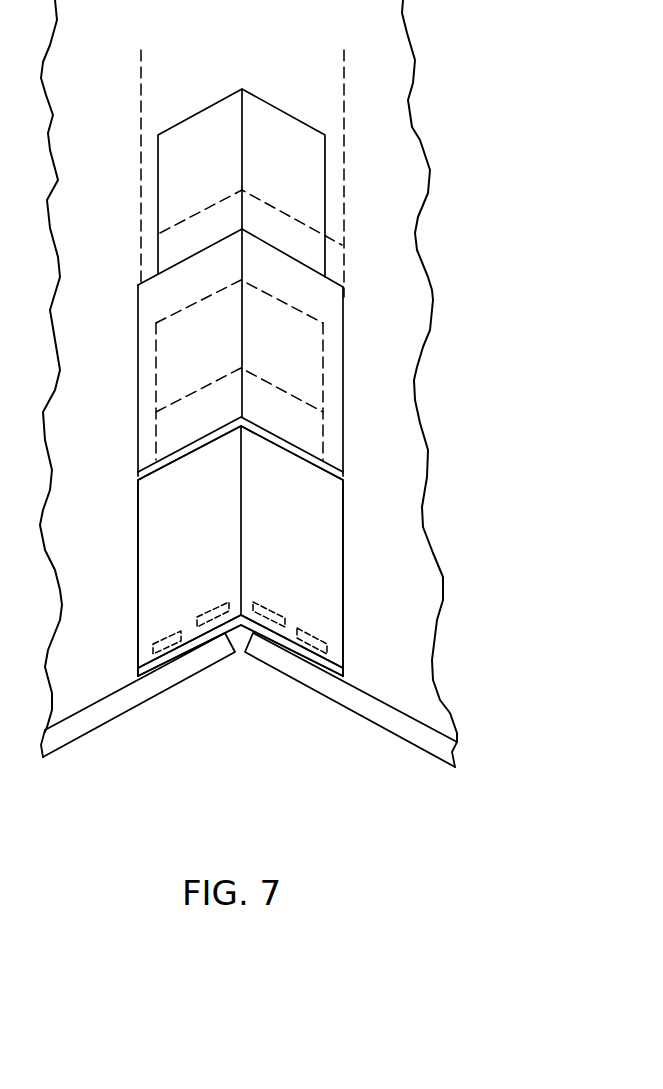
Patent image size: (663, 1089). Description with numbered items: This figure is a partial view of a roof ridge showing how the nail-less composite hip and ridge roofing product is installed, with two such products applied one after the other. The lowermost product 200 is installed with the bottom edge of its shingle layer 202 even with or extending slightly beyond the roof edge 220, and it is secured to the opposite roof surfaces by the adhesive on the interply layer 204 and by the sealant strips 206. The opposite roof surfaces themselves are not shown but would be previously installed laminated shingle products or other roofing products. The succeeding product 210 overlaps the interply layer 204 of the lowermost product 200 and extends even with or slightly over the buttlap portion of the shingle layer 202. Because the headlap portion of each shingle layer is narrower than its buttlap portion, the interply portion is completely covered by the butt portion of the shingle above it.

The lowermost product 200 is at (363, 610).
The shingle layer 202 is at (323, 612).
The interply layer 204 is at (305, 378).
The sealant strips 206 is at (213, 620).
The succeeding product 210 is at (351, 314).
The roof edge 220 is at (70, 732).